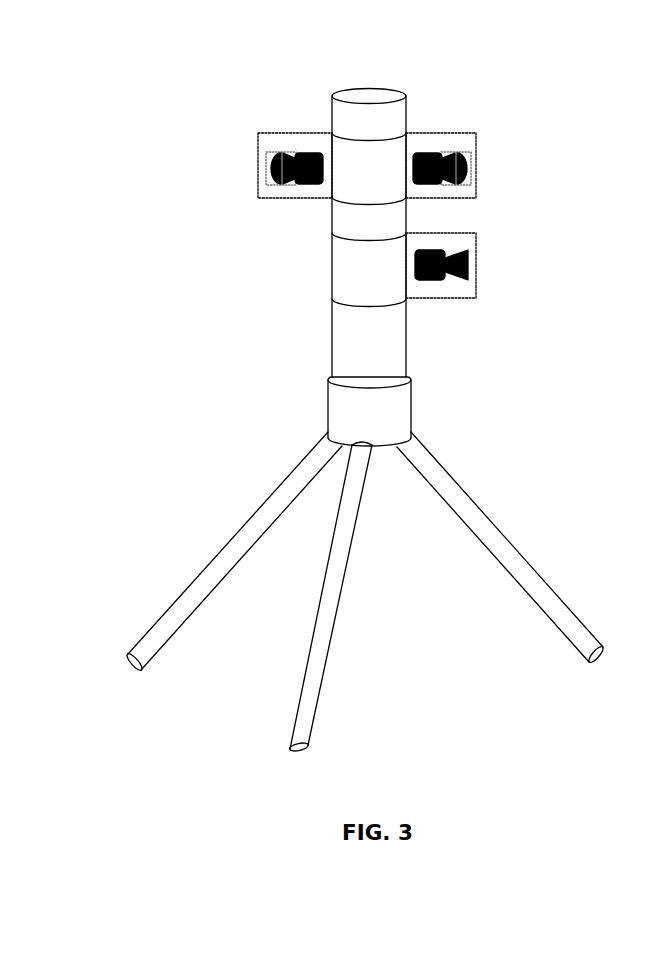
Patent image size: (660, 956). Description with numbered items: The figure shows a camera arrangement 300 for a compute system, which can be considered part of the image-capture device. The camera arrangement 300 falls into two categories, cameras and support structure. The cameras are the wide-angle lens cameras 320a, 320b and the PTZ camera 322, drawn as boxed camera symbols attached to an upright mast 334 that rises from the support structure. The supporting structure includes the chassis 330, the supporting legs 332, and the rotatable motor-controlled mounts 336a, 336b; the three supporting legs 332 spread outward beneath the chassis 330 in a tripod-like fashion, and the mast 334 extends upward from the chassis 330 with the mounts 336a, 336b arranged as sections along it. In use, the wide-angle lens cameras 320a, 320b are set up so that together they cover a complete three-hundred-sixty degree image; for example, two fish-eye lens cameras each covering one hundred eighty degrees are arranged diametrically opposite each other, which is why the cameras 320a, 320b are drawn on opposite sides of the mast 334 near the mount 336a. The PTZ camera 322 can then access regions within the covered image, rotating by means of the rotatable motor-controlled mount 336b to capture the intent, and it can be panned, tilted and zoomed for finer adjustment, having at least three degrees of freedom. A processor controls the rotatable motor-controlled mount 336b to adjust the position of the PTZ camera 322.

The camera arrangement 300 is at (103, 78).
The wide-angle lens camera 320a is at (258, 146).
The wide-angle lens camera 320b is at (473, 145).
The PTZ camera 322 is at (473, 247).
The chassis 330 is at (330, 415).
The supporting legs 332 is at (240, 528).
The mast 334 is at (348, 338).
The rotatable motor-controlled mount 336a is at (368, 147).
The rotatable motor-controlled mount 336b is at (344, 275).